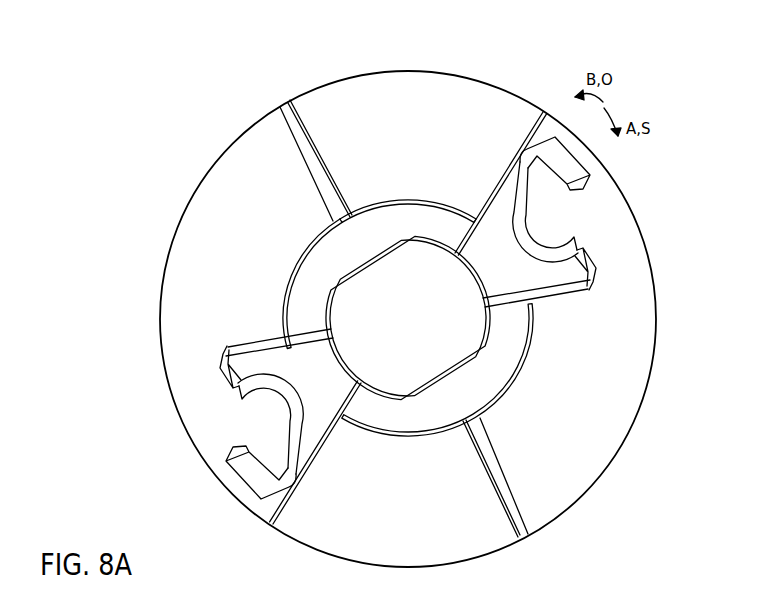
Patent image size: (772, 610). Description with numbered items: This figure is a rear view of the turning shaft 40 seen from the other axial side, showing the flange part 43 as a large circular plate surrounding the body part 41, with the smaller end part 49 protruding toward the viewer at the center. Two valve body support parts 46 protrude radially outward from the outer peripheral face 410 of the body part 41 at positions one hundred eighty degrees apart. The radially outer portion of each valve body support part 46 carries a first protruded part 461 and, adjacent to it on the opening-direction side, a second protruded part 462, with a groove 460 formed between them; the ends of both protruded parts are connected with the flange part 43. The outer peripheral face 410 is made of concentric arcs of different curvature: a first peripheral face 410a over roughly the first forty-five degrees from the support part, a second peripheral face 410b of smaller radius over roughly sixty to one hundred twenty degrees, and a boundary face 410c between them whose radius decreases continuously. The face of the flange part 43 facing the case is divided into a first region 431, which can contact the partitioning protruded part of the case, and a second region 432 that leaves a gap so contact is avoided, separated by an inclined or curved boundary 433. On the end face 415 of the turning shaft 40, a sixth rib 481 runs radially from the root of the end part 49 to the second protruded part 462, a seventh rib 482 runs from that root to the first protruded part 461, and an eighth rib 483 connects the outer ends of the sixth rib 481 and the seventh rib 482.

The turning shaft 40 is at (634, 213).
The body part 41 is at (540, 352).
The flange part 43 is at (633, 425).
The valve body support part 46 is at (402, 291).
The end part 49 is at (520, 380).
The outer peripheral face 410 is at (462, 319).
The first peripheral face 410a is at (284, 292).
The second peripheral face 410b is at (398, 198).
The boundary face 410c is at (346, 216).
The end face 415 is at (427, 412).
The first region 431 is at (205, 215).
The second region 432 is at (385, 78).
The boundary 433 is at (288, 112).
The groove 460 is at (407, 321).
The first protruded part 461 is at (558, 277).
The second protruded part 462 is at (538, 140).
The sixth rib 481 is at (497, 168).
The seventh rib 482 is at (243, 351).
The eighth rib 483 is at (535, 252).